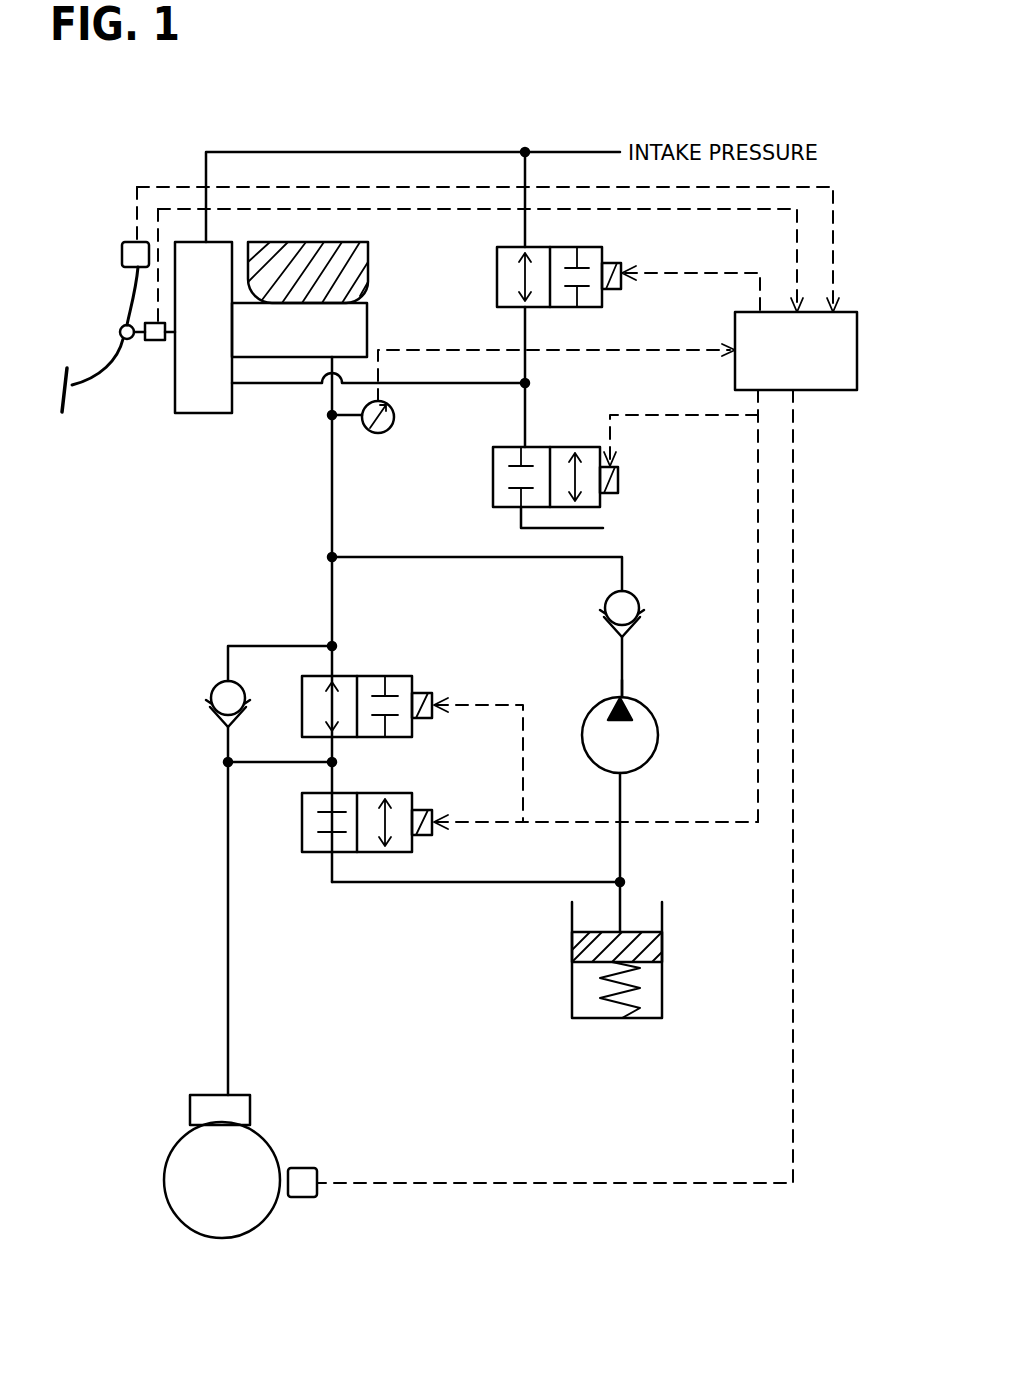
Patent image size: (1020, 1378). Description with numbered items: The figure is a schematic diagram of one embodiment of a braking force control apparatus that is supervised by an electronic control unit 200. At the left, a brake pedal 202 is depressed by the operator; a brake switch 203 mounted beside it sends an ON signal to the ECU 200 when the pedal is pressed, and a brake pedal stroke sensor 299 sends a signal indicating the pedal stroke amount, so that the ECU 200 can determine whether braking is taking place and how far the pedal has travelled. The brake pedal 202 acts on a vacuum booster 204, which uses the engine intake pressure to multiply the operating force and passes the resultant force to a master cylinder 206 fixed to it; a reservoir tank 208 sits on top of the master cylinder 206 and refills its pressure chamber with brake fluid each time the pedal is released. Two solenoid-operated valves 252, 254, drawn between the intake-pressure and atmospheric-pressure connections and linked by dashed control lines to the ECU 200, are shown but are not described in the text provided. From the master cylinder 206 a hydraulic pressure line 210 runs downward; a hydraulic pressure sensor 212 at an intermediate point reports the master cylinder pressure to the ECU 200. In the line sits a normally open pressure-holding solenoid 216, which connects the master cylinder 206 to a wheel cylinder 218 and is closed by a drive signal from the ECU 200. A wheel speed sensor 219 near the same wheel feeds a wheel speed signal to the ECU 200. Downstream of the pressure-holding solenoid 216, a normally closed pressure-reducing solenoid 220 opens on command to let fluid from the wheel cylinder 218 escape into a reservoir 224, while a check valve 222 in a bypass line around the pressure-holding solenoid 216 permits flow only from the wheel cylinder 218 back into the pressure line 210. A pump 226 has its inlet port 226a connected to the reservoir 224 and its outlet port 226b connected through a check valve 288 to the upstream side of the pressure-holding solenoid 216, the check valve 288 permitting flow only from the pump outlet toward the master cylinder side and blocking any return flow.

The electronic control unit 200 is at (830, 390).
The brake pedal 202 is at (83, 388).
The brake switch 203 is at (124, 242).
The vacuum booster 204 is at (200, 413).
The master cylinder 206 is at (367, 330).
The reservoir tank 208 is at (368, 270).
The hydraulic pressure line 210 is at (330, 438).
The hydraulic pressure sensor 212 is at (394, 417).
The pressure-holding solenoid (SH) 216 is at (380, 676).
The wheel cylinder 218 is at (250, 1102).
The wheel speed sensor 219 is at (303, 1197).
The pressure-reducing solenoid (SR) 220 is at (377, 793).
The check valve 222 is at (195, 678).
The reservoir 224 is at (570, 998).
The pump 226 is at (658, 728).
The inlet port 226a is at (621, 774).
The outlet port 226b is at (623, 695).
The intake pressure solenoid valve 252 is at (612, 262).
The atmospheric pressure solenoid valve 254 is at (618, 480).
The check valve 288 is at (639, 600).
The brake pedal stroke sensor 299 is at (155, 340).